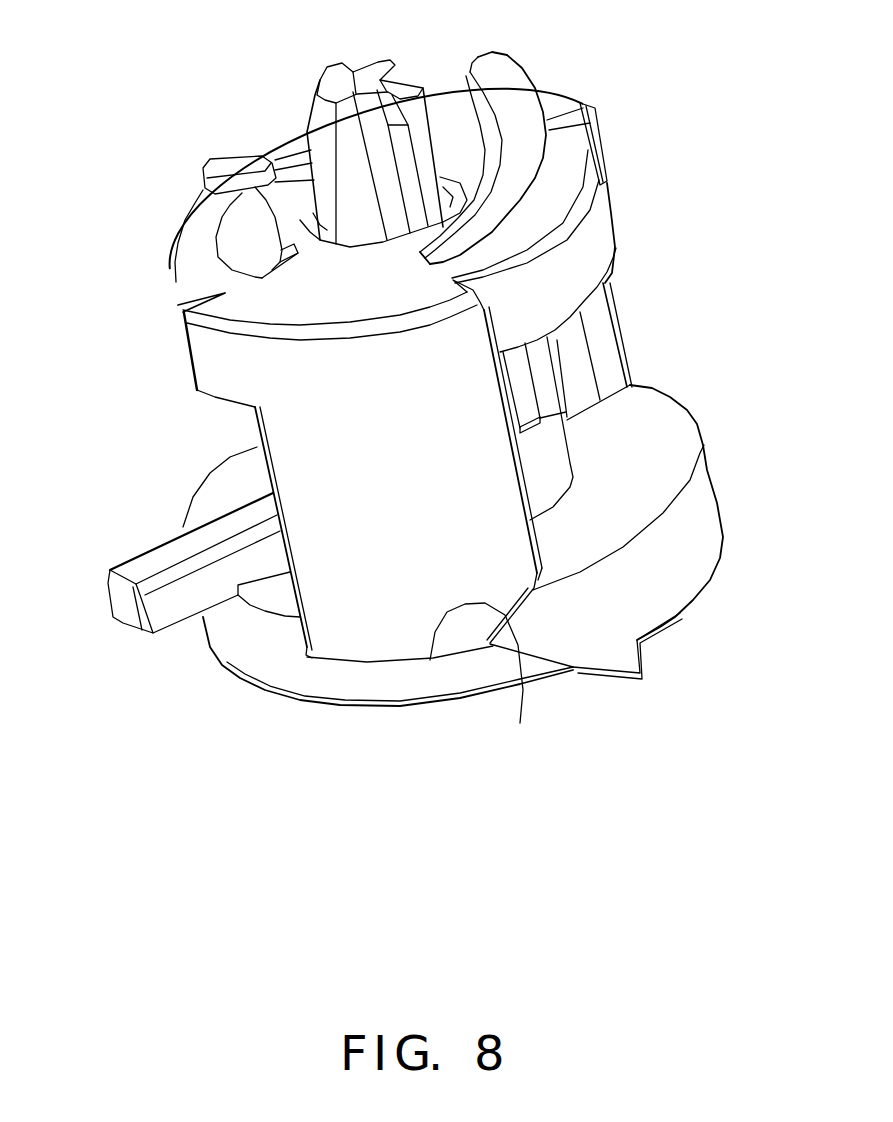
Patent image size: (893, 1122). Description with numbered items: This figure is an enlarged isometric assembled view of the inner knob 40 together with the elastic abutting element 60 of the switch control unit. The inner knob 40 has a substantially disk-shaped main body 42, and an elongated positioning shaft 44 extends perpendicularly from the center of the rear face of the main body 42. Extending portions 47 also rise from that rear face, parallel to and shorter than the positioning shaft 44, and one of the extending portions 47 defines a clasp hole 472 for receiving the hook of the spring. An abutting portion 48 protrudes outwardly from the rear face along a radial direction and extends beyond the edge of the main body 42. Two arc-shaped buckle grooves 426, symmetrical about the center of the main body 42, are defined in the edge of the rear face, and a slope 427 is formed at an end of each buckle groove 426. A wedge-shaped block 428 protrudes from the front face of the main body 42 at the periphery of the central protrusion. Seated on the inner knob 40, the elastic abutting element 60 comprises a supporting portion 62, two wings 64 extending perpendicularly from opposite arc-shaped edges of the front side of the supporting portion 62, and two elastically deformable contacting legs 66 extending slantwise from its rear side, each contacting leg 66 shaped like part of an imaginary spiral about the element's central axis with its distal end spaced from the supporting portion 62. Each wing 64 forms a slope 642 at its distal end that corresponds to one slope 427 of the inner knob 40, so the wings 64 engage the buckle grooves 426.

The inner knob 40 is at (364, 672).
The main body 42 is at (400, 720).
The positioning shaft 44 is at (349, 129).
The extending portion 47 is at (657, 512).
The abutting portion 48 is at (177, 540).
The elastic abutting element 60 is at (324, 248).
The supporting portion 62 is at (588, 245).
The wing 64 is at (398, 544).
The contacting leg 66 is at (513, 148).
The buckle groove 426 is at (530, 706).
The slope 427 is at (588, 682).
The wedge-shaped block 428 is at (665, 671).
The clasp hole 472 is at (615, 416).
The slope 642 is at (461, 699).